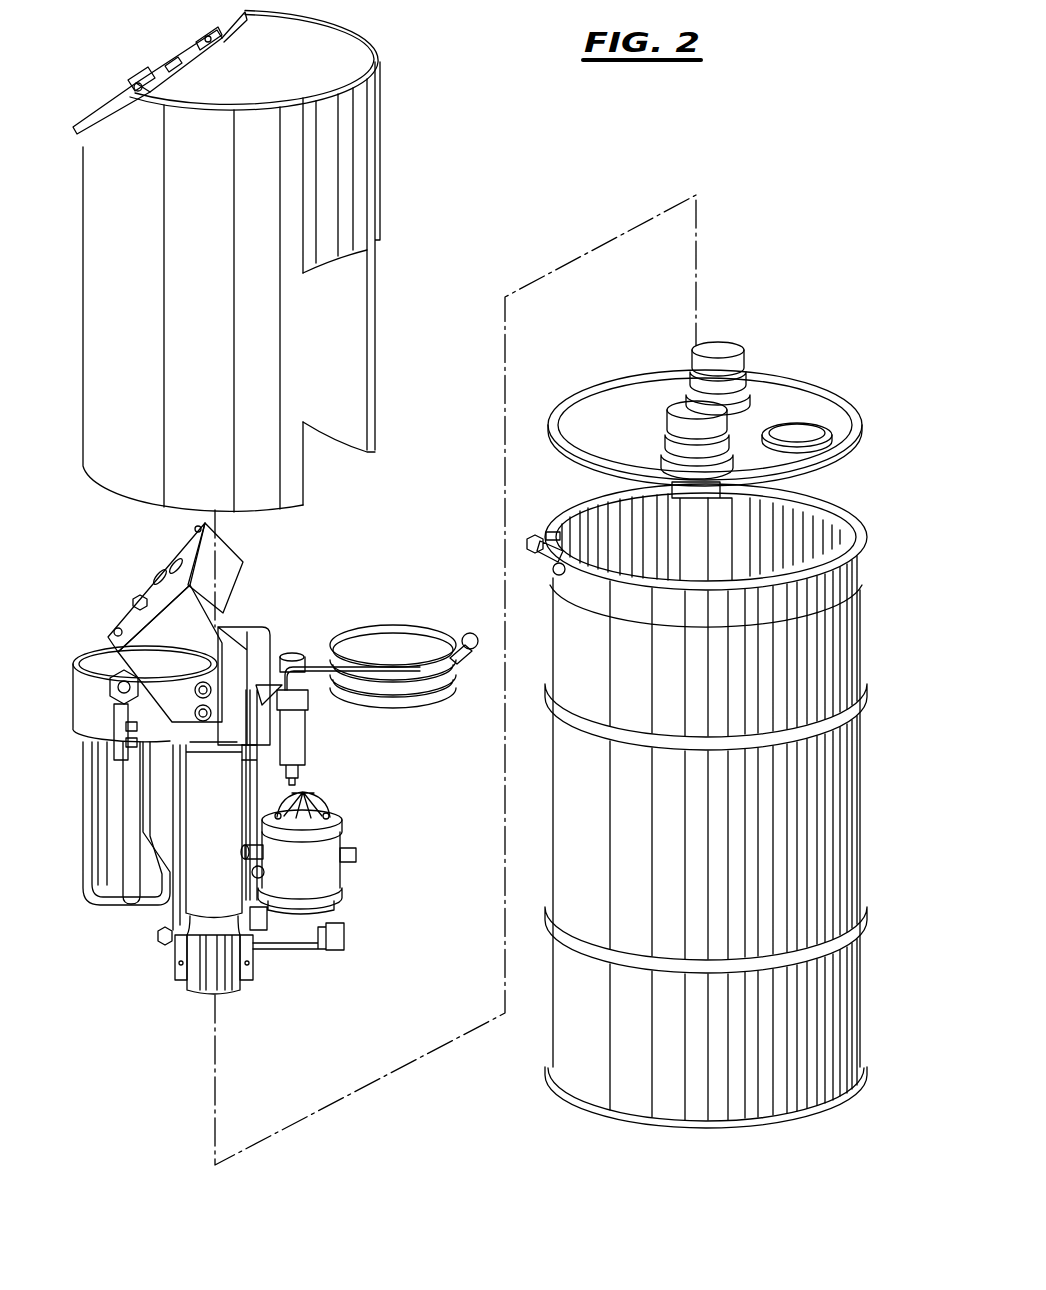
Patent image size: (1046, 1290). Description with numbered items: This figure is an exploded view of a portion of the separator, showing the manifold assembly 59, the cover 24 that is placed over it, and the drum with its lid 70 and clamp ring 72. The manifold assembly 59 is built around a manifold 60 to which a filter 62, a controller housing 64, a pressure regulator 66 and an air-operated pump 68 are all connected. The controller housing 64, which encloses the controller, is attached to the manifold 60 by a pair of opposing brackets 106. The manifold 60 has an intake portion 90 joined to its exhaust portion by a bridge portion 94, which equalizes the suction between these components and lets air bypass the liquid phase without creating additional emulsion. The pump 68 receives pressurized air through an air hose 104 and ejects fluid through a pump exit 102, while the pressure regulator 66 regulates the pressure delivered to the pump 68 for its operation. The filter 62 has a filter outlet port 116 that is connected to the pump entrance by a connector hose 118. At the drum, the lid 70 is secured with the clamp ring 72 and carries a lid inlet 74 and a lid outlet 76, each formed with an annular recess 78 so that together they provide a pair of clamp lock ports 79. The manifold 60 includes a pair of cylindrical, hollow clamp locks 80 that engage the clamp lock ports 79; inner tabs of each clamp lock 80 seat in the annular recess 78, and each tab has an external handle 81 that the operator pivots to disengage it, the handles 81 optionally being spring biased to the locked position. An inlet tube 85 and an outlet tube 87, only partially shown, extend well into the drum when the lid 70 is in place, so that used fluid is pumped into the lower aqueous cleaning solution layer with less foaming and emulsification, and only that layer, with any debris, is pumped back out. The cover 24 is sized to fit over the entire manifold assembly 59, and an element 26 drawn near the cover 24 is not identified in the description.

The cover 24 is at (367, 165).
The hanger coupler 26 is at (140, 75).
The manifold assembly 59 is at (97, 590).
The manifold 60 is at (248, 637).
The filter 62 is at (107, 847).
The controller housing 64 is at (217, 553).
The pressure regulator 66 is at (297, 743).
The pump 68 is at (322, 857).
The lid 70 is at (785, 407).
The clamp ring 72 is at (862, 532).
The lid inlet 74 is at (680, 400).
The lid outlet 76 is at (717, 345).
The annular recess 78 is at (748, 373).
The clamp lock port 79 is at (657, 438).
The clamp lock 80 is at (200, 973).
The external handle 81 is at (176, 925).
The inlet tube 85 is at (693, 552).
The outlet tube 87 is at (720, 503).
The intake portion 90 is at (224, 836).
The bridge portion 94 is at (288, 650).
The pump exit 102 is at (340, 928).
The air hose 104 is at (387, 632).
The brackets 106 is at (133, 590).
The filter outlet port 116 is at (113, 700).
The connector hose 118 is at (158, 860).